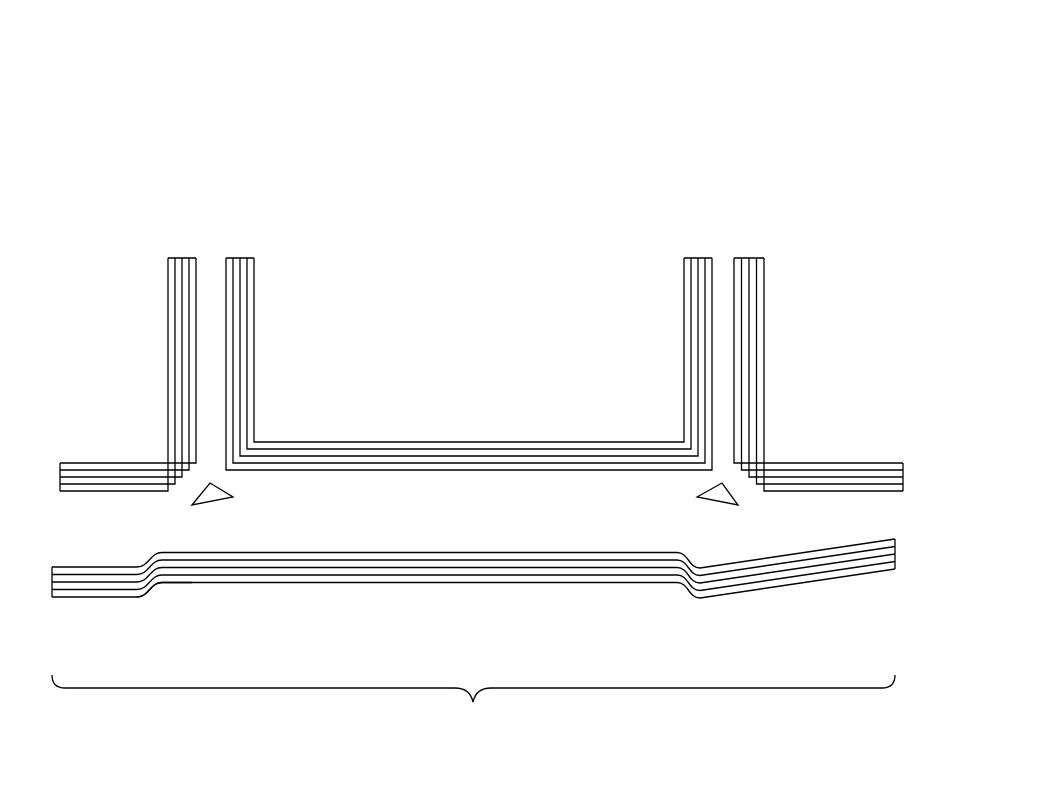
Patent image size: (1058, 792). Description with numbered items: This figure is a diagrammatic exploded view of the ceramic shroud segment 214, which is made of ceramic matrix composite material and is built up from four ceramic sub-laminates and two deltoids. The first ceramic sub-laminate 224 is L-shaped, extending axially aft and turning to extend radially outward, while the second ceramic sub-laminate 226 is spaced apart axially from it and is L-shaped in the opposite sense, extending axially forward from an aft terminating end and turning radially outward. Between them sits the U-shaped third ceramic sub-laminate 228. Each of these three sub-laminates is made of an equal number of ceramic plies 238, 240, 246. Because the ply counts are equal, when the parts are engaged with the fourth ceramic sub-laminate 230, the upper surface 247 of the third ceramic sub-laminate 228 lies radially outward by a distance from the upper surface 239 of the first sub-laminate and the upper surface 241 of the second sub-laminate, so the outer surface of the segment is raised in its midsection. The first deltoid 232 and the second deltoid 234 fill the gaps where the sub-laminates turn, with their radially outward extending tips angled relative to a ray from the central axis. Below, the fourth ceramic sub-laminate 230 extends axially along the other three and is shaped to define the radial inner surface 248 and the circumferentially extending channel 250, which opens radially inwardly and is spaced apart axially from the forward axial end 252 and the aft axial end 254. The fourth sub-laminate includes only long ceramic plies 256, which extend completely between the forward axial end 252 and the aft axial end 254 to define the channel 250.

The ceramic shroud segment 214 is at (150, 150).
The first ceramic sub-laminate 224 is at (122, 425).
The second ceramic sub-laminate 226 is at (795, 373).
The third ceramic sub-laminate 228 is at (270, 380).
The fourth ceramic sub-laminate 230 is at (278, 592).
The first deltoid 232 is at (210, 506).
The second deltoid 234 is at (718, 506).
The ceramic plies 238 is at (178, 266).
The upper surface 239 is at (85, 463).
The ceramic plies 240 is at (752, 264).
The upper surface 241 is at (827, 463).
The ceramic plies 246 is at (237, 264).
The upper surface 247 is at (470, 441).
The radial inner surface 248 is at (480, 585).
The circumferentially extending channel 250 is at (175, 592).
The forward axial end 252 is at (52, 584).
The aft axial end 254 is at (897, 551).
The long ceramic plies 256 is at (348, 564).